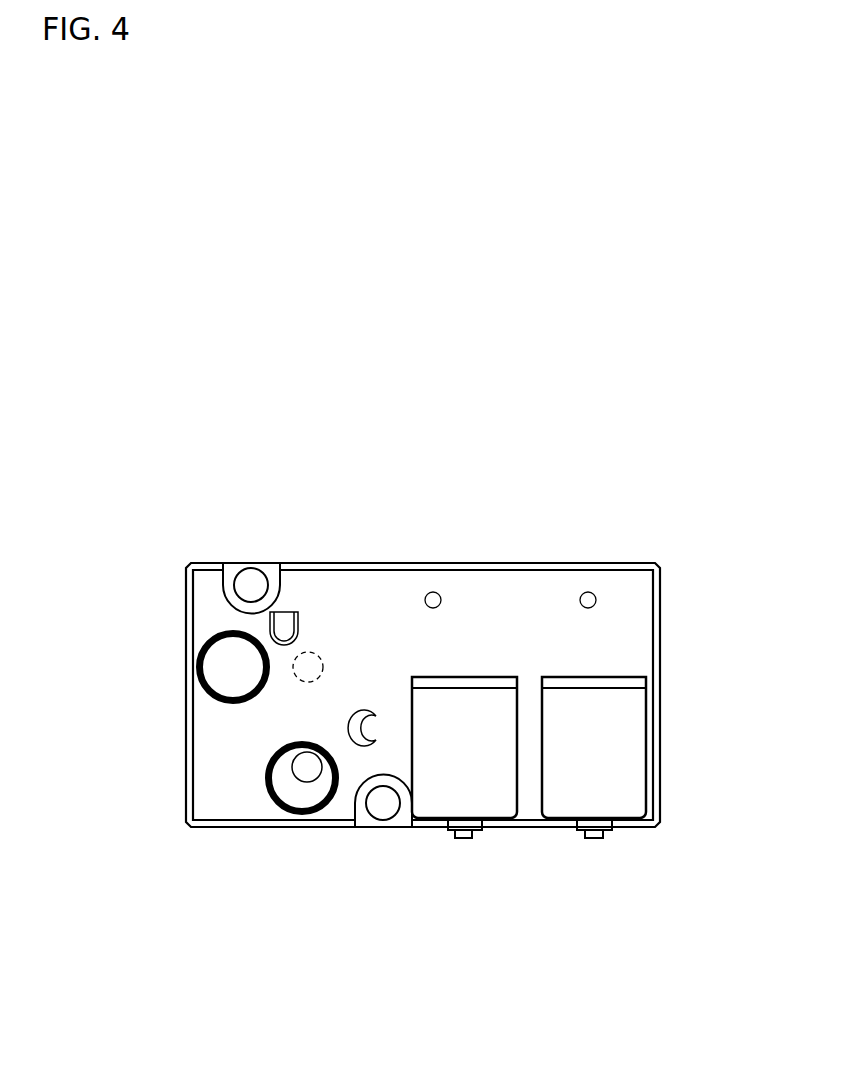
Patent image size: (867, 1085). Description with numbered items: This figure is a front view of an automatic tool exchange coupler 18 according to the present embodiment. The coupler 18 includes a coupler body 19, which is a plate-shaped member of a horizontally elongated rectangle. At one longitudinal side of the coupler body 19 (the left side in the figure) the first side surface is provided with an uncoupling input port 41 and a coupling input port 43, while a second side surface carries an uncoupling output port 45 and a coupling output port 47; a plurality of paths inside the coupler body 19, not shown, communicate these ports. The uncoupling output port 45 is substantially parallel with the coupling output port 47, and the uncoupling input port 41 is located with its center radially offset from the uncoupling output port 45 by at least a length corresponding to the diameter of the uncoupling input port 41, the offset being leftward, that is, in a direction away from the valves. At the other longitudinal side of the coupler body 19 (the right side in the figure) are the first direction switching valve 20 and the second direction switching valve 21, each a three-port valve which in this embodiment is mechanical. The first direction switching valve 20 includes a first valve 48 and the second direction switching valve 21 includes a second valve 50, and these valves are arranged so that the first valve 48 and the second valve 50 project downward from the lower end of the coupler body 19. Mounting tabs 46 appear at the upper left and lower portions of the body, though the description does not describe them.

The coupler 18 is at (716, 566).
The coupler body 19 is at (402, 580).
The first direction switching valve 20 is at (465, 728).
The second direction switching valve 21 is at (582, 730).
The uncoupling input port 41 is at (228, 667).
The coupling input port 43 is at (313, 798).
The uncoupling output port 45 is at (320, 652).
The mounting tab 46 is at (251, 585).
The coupling output port 47 is at (303, 772).
The first valve 48 is at (463, 840).
The second valve 50 is at (595, 840).